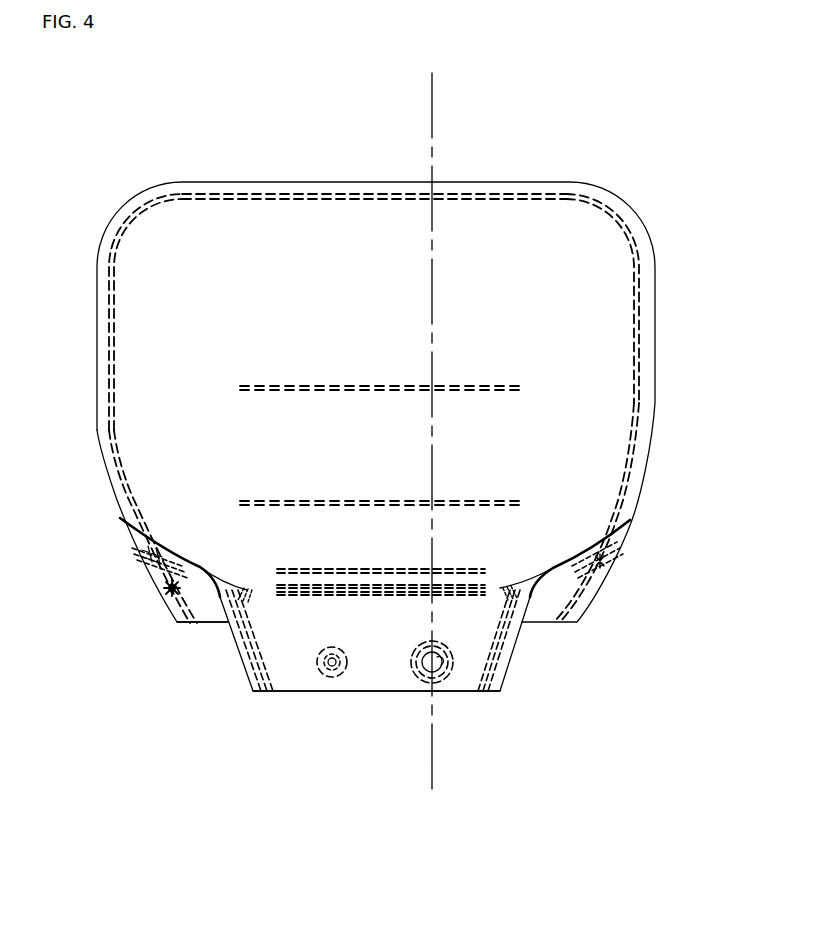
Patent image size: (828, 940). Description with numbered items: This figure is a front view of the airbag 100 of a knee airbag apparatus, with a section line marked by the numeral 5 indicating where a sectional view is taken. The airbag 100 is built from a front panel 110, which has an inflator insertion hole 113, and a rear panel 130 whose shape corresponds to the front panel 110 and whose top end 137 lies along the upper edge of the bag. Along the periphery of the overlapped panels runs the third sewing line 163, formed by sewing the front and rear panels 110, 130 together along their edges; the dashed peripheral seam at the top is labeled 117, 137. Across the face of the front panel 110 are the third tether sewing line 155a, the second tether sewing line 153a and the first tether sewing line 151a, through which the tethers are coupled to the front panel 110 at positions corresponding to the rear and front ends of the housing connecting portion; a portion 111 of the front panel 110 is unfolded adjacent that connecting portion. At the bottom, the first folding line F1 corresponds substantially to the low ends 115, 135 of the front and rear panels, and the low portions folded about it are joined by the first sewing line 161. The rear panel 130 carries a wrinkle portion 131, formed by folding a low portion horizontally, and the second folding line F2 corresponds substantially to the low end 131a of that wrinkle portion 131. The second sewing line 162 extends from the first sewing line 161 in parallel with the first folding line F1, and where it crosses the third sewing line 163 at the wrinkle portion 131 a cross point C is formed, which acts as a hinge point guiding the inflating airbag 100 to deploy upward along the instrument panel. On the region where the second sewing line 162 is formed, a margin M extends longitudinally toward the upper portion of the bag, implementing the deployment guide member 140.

The housing 5 is at (433, 83).
The airbag 100 is at (247, 176).
The front panel 110 is at (177, 245).
The upper sewing line 117 is at (374, 156).
The top end of the rear panel 137 is at (314, 180).
The third sewing line 163 is at (557, 193).
The third tether sewing line 155a is at (495, 385).
The second tether sewing line 153a is at (313, 568).
The first tether sewing line 151a is at (383, 596).
The portion of the front panel 111 is at (292, 578).
The rear panel 130 is at (122, 540).
The wrinkle portion 131 is at (167, 593).
The low end of the wrinkle portion 131a is at (205, 625).
The second folding line F2 is at (197, 644).
The deployment guide member 140 is at (577, 550).
The second sewing line 162 is at (618, 547).
The cross point C is at (597, 560).
The margin M is at (573, 561).
The first sewing line 161 is at (507, 638).
The inflator insertion hole 113 is at (440, 665).
The low end of the front panel 115 is at (376, 744).
The low end of the rear panel 135 is at (348, 691).
The first folding line F1 is at (376, 744).